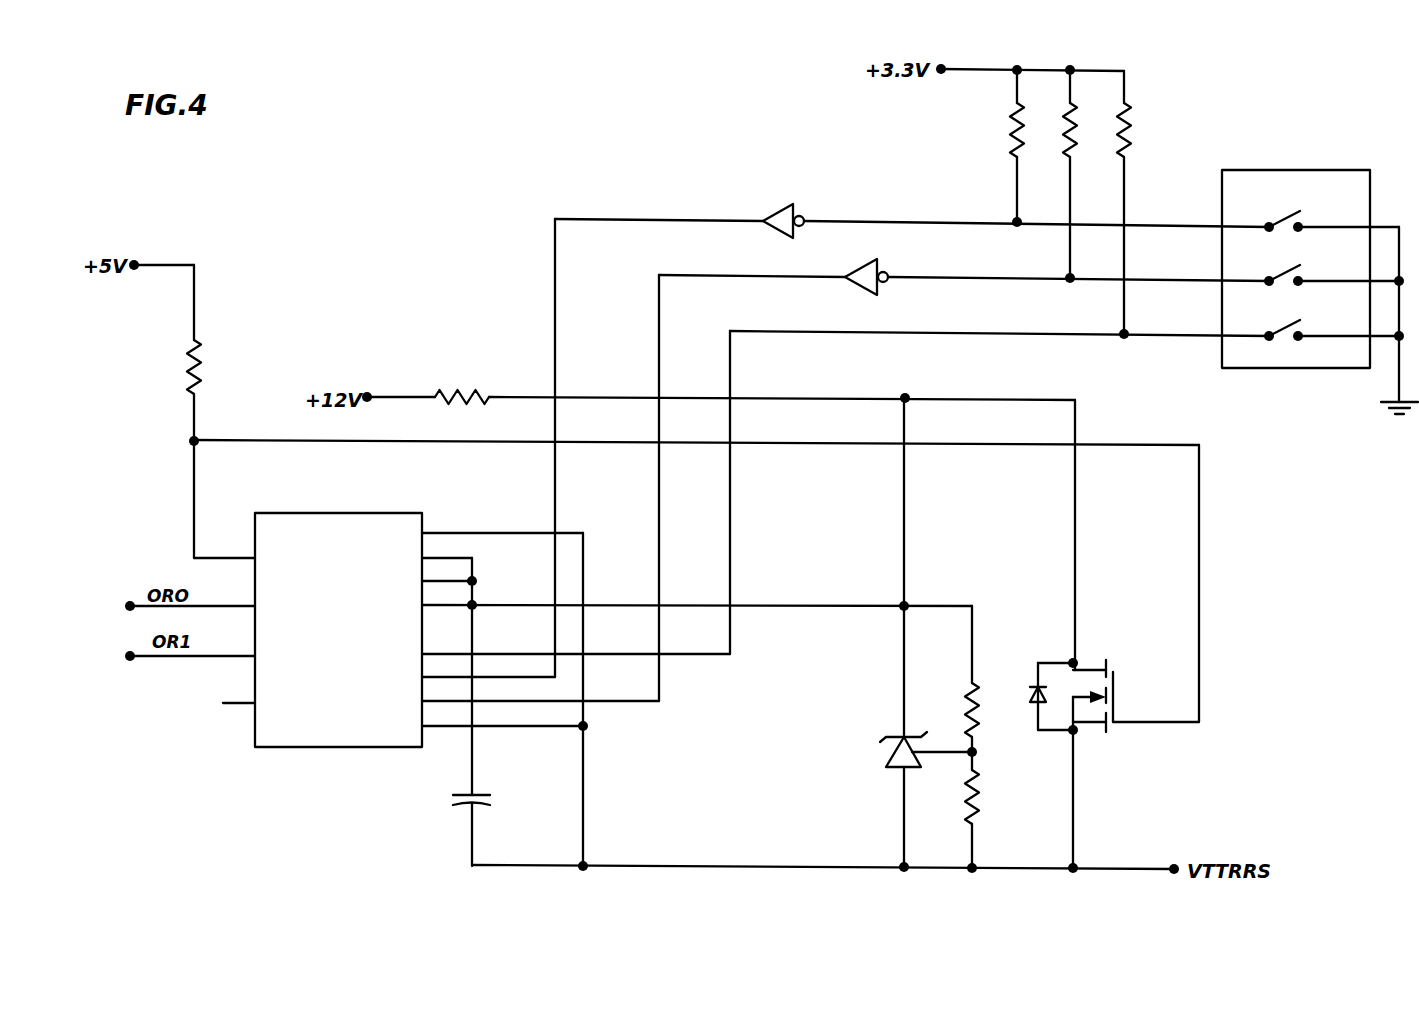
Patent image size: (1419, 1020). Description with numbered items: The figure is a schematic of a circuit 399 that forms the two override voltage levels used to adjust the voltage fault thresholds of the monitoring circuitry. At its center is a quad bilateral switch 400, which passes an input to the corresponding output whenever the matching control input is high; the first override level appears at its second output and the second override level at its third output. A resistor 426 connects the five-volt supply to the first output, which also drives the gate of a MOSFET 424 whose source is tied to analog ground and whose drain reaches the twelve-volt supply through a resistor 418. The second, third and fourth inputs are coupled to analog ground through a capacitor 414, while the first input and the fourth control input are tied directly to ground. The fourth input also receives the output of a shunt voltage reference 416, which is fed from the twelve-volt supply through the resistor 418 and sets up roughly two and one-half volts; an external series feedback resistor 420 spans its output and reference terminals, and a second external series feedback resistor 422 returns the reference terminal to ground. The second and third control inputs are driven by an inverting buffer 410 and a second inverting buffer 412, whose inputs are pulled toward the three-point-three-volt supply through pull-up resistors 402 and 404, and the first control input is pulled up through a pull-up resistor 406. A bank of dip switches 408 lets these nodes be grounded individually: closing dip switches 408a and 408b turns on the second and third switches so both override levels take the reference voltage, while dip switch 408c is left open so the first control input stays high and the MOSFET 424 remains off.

The circuit 399 is at (316, 817).
The quad bilateral switch 400 is at (308, 748).
The pull-up resistor 402 is at (1017, 123).
The pull-up resistor 404 is at (1070, 105).
The pull-up resistor 406 is at (1123, 117).
The bank of dip switches 408 is at (1300, 168).
The dip switch 408a is at (1328, 198).
The dip switch 408b is at (1333, 252).
The dip switch 408c is at (1333, 305).
The inverting buffer 410 is at (783, 205).
The second inverting buffer 412 is at (877, 285).
The capacitor 414 is at (488, 795).
The shunt voltage reference 416 is at (888, 757).
The resistor 418 is at (475, 387).
The external series feedback resistor 420 is at (975, 683).
The second external series feedback resistor 422 is at (978, 790).
The MOSFET 424 is at (1088, 668).
The resistor 426 is at (200, 353).